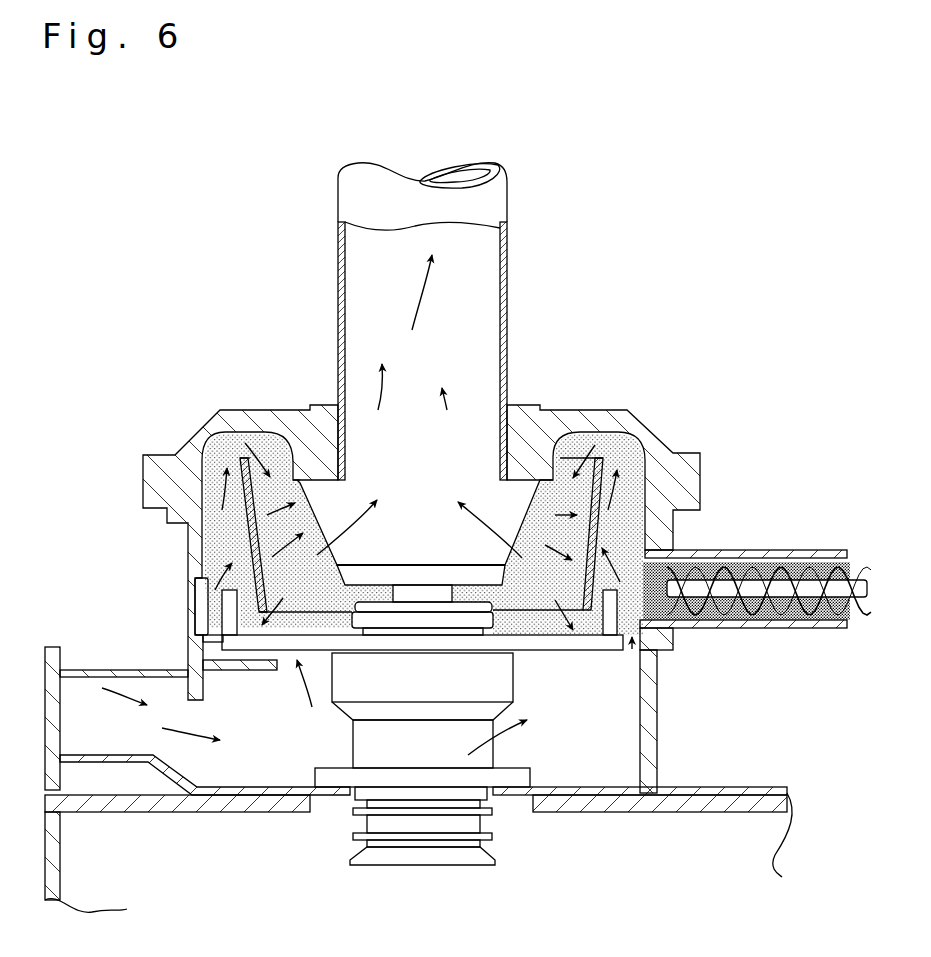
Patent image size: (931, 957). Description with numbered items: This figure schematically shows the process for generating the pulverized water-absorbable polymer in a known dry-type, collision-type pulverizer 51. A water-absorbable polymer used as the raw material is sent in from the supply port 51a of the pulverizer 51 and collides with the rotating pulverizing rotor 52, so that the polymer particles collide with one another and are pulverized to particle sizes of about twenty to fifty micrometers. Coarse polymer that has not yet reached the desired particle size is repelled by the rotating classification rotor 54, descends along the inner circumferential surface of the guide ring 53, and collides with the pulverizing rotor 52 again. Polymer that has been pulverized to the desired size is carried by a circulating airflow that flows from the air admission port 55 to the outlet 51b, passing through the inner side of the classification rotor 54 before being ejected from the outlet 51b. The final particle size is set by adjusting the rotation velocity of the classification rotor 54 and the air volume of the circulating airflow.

The pulverizer 51 is at (262, 312).
The supply port 51a is at (673, 552).
The outlet 51b is at (463, 177).
The pulverizing rotor 52 is at (674, 649).
The guide ring 53 is at (590, 490).
The classification rotor 54 is at (515, 487).
The air admission port 55 is at (50, 716).